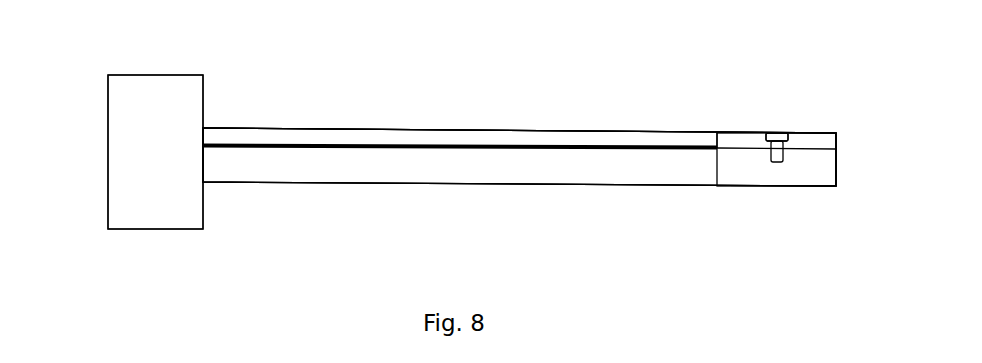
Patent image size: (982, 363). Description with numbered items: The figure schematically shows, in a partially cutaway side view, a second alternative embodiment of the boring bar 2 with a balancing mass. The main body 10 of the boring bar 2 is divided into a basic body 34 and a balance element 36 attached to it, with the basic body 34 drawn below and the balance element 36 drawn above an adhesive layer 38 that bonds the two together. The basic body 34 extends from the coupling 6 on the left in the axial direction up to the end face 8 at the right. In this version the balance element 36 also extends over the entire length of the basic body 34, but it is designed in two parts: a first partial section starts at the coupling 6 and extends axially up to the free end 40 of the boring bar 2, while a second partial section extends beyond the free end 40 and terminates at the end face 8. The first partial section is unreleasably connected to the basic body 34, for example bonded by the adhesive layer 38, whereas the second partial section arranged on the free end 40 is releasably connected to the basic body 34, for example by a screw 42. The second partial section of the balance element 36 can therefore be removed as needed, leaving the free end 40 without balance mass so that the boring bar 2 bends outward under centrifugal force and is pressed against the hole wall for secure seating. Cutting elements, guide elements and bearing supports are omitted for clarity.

The boring bar 2 is at (166, 43).
The coupling 6 is at (104, 193).
The end face 8 is at (842, 162).
The main body 10 is at (365, 228).
The basic body 34 is at (609, 190).
The balance element 36 is at (723, 126).
The adhesive layer 38 is at (388, 138).
The free end 40 is at (810, 94).
The screw 42 is at (786, 127).